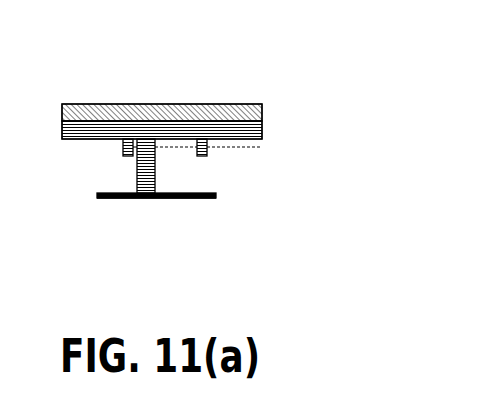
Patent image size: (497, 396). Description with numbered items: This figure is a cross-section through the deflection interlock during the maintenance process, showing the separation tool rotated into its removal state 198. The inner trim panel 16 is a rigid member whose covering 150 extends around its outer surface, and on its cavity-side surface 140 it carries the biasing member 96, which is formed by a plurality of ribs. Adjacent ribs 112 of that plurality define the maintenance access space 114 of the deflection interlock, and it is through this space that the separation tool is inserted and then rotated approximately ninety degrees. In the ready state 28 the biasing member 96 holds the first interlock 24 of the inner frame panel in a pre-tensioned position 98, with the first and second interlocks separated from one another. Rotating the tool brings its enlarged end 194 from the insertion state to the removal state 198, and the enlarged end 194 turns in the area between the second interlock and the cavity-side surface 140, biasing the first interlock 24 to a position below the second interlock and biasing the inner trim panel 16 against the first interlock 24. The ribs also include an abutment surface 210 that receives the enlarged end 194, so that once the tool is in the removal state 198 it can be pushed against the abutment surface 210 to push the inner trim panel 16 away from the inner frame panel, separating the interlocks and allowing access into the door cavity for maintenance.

The inner trim panel 16 is at (59, 121).
The covering 150 is at (117, 104).
The cavity-side surface 140 is at (87, 139).
The ready state 28 is at (88, 205).
The adjacent ribs 112 is at (128, 157).
The maintenance access space 114 is at (165, 181).
The enlarged end 194 is at (157, 150).
The abutment surface 210 is at (188, 147).
The first interlock 24 is at (205, 196).
The pre-tensioned position 98 is at (203, 205).
The biasing member 96 is at (263, 150).
The removal state 198 is at (205, 173).